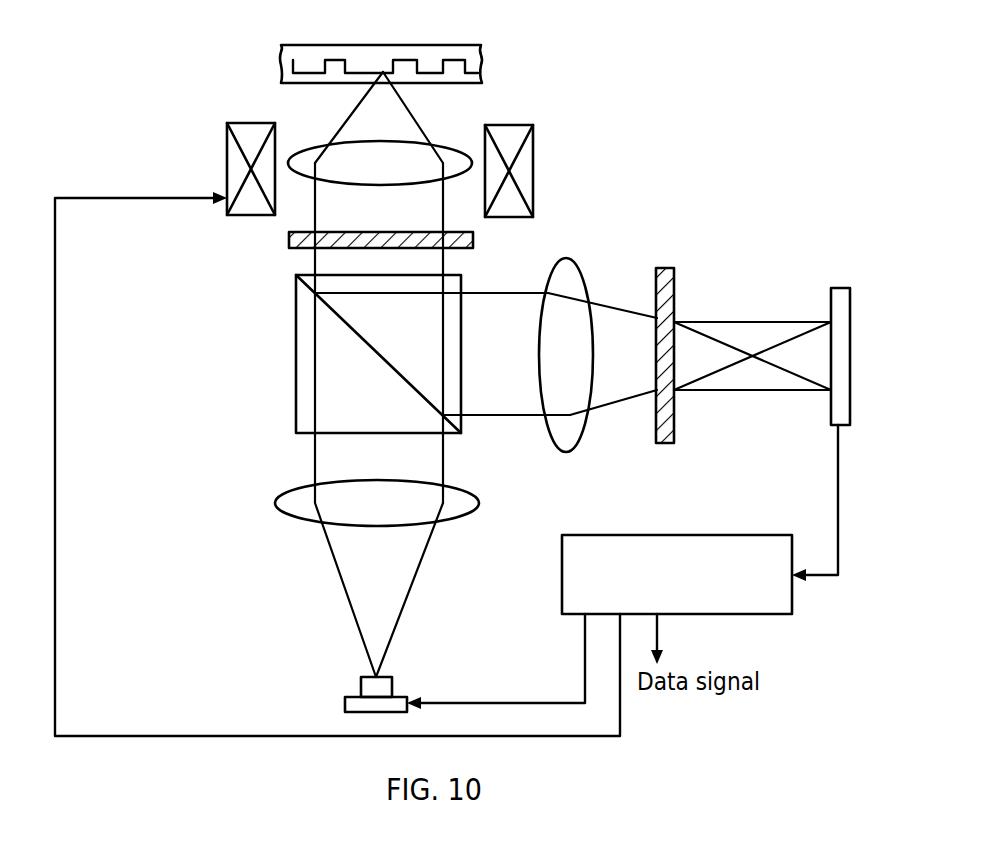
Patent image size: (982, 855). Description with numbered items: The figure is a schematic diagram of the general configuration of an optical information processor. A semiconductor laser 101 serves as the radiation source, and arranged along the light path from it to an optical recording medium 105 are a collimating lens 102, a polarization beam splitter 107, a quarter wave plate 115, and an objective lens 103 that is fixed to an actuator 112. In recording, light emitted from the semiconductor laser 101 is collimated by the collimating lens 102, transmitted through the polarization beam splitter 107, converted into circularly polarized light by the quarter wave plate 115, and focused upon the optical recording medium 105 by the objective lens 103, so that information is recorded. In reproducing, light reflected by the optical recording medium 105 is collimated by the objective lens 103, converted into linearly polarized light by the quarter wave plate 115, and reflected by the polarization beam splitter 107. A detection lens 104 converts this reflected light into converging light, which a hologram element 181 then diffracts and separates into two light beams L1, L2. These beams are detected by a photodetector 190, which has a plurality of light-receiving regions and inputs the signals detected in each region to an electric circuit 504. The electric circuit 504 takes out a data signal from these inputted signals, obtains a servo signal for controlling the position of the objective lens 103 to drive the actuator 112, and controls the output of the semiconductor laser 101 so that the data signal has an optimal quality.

The semiconductor laser 101 is at (345, 701).
The collimating lens 102 is at (278, 498).
The objective lens 103 is at (313, 157).
The detection lens 104 is at (568, 263).
The optical recording medium 105 is at (282, 46).
The polarization beam splitter 107 is at (300, 356).
The actuator 112 is at (228, 150).
The quarter wave plate 115 is at (289, 240).
The hologram element 181 is at (660, 268).
The photodetector 190 is at (837, 288).
The electric circuit 504 is at (585, 535).
The diffracted light beam L1 is at (783, 392).
The diffracted light beam L2 is at (730, 320).